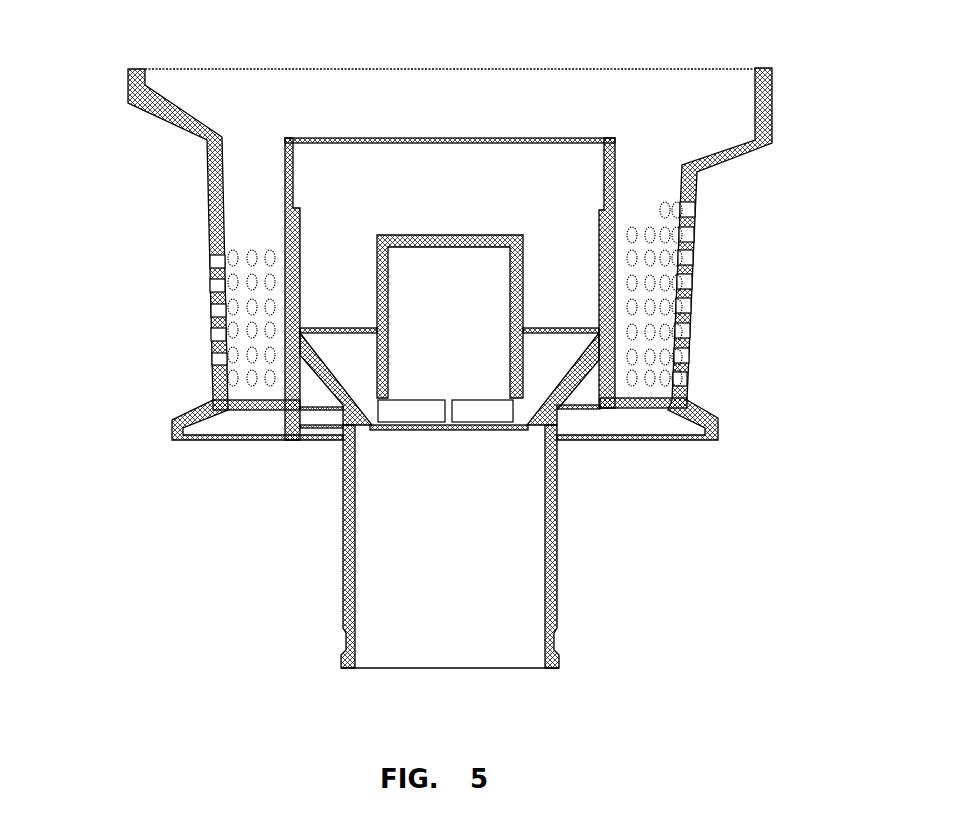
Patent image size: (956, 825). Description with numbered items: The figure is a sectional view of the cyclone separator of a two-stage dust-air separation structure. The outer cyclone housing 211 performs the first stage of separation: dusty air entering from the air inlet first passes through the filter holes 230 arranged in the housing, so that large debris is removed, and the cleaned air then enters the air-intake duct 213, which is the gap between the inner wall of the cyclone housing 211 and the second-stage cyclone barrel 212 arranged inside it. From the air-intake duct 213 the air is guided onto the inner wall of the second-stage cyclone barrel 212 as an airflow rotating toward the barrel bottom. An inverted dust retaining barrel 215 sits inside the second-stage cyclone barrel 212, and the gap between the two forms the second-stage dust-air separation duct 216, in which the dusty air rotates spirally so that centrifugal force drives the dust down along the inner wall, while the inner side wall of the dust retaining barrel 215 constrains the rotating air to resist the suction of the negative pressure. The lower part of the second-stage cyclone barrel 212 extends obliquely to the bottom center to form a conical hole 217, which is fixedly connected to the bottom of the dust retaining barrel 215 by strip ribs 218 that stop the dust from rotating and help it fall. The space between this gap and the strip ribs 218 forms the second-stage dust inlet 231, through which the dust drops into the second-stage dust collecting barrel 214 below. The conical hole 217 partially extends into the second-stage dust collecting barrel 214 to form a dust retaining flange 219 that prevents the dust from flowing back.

The cyclone housing 211 is at (205, 187).
The second-stage cyclone barrel 212 is at (285, 283).
The air-intake duct 213 is at (248, 152).
The second-stage dust collecting barrel 214 is at (463, 537).
The dust retaining barrel 215 is at (523, 282).
The second-stage dust-air separation duct 216 is at (557, 244).
The conical hole 217 is at (560, 400).
The strip ribs 218 is at (443, 418).
The dust retaining flange 219 is at (373, 428).
The filter holes 230 is at (230, 308).
The second-stage dust inlet 231 is at (478, 417).